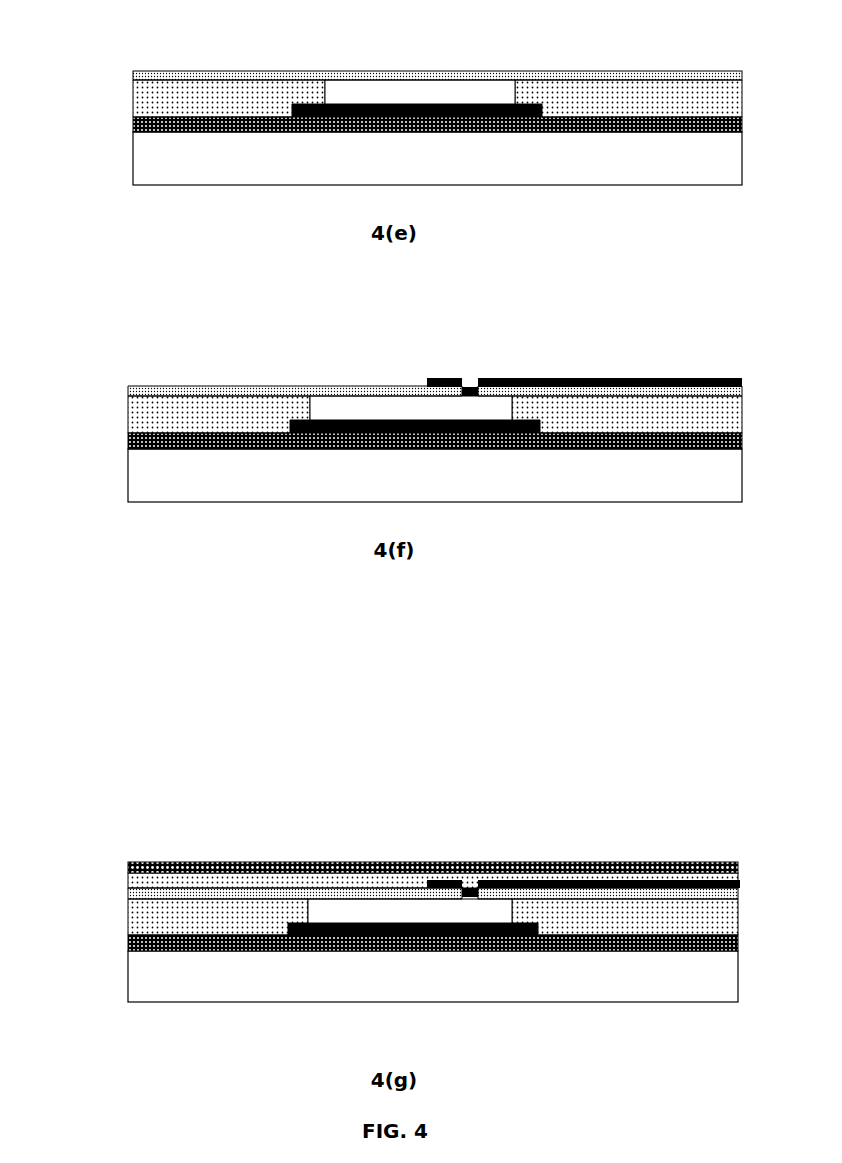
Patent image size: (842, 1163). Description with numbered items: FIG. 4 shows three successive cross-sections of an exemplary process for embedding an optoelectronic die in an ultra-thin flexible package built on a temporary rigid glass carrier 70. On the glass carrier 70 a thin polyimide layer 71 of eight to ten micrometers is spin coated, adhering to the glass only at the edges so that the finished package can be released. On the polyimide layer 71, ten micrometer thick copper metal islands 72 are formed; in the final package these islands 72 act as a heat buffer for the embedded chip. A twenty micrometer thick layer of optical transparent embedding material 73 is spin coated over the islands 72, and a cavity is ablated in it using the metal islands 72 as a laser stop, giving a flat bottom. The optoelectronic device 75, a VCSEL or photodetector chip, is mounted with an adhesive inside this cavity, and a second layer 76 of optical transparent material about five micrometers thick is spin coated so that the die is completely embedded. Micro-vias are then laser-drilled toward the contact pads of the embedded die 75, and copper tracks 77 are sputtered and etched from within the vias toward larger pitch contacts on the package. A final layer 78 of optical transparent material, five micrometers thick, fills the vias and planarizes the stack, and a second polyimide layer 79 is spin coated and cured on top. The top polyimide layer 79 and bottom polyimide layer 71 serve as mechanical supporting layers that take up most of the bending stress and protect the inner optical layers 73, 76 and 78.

The glass carrier 70 is at (435, 567).
The polyimide layer 71 is at (132, 125).
The metal islands 72 is at (307, 100).
The optical transparent embedding material 73 is at (203, 93).
The optoelectronic device 75 is at (444, 95).
The second layer of optical transparent material 76 is at (645, 73).
The copper tracks 77 is at (568, 375).
The final layer of optical transparent material 78 is at (639, 877).
The second polyimide layer 79 is at (693, 862).